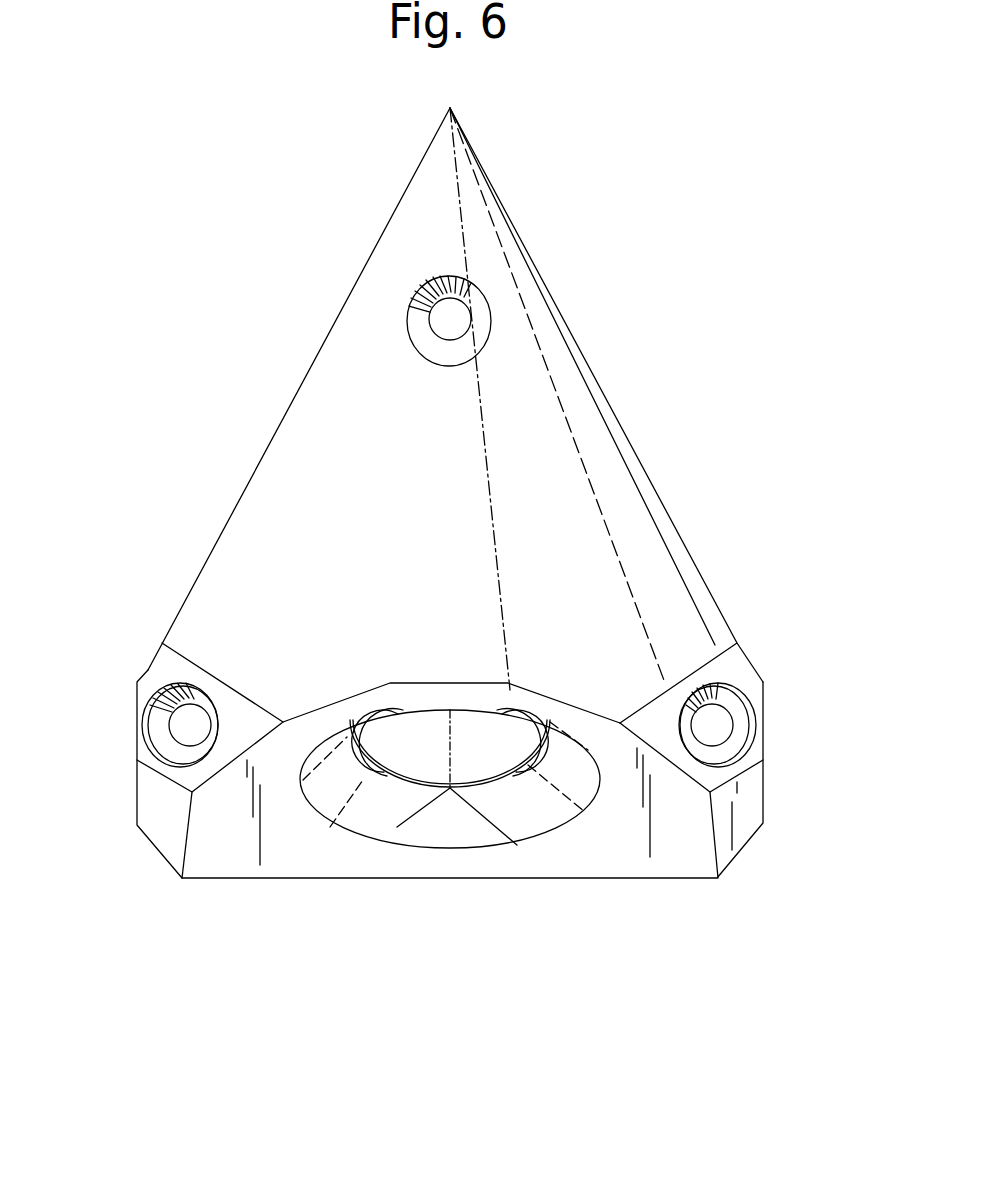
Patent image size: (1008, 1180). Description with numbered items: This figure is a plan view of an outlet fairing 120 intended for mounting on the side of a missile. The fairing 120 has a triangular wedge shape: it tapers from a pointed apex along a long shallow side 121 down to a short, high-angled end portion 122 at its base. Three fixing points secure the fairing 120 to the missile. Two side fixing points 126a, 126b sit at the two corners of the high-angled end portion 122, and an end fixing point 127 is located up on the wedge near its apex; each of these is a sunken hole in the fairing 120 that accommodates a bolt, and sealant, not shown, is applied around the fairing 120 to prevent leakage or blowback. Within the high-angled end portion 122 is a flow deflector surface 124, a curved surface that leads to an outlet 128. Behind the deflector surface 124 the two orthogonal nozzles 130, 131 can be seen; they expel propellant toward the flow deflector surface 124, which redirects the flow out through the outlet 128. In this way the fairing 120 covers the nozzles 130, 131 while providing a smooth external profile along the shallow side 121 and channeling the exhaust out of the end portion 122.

The outlet fairing 120 is at (548, 220).
The long shallow side 121 is at (642, 567).
The short high-angled end portion 122 is at (663, 852).
The flow deflector surface 124 is at (445, 827).
The side fixing point 126a is at (188, 725).
The side fixing point 126b is at (712, 725).
The end fixing point 127 is at (455, 320).
The outlet 128 is at (478, 847).
The nozzle 130 is at (377, 732).
The nozzle 131 is at (525, 732).